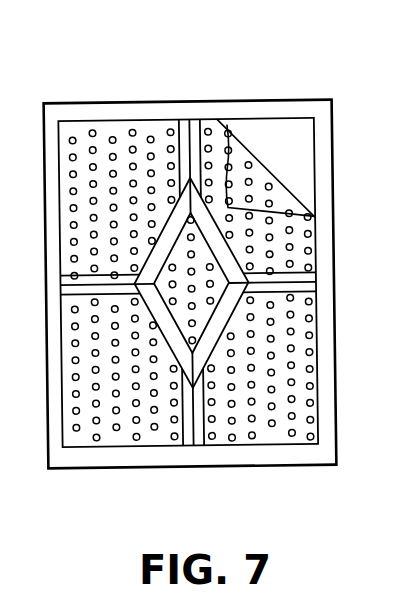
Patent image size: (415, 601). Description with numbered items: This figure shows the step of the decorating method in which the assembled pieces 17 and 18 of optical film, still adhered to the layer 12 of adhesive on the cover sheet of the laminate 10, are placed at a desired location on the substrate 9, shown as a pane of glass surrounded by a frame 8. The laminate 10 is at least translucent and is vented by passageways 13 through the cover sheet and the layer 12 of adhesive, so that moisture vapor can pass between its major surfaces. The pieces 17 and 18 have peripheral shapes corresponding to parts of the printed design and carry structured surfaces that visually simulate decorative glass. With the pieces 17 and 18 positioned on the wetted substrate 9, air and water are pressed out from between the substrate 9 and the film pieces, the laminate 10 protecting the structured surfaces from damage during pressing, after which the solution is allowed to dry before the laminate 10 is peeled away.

The frame 8 is at (296, 468).
The substrate 9 is at (304, 150).
The laminate 10 is at (258, 159).
The layer of pressure-sensitive adhesive 12 is at (260, 171).
The passageways 13 is at (94, 129).
The pieces of optical film 17 is at (221, 124).
The pieces of optical film 18 is at (171, 246).